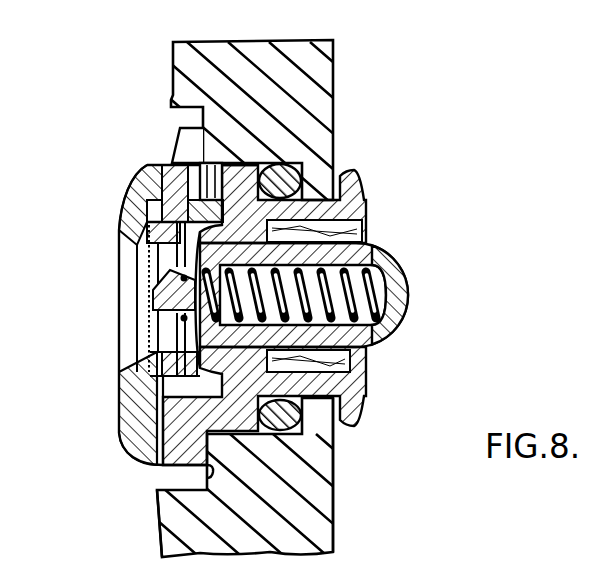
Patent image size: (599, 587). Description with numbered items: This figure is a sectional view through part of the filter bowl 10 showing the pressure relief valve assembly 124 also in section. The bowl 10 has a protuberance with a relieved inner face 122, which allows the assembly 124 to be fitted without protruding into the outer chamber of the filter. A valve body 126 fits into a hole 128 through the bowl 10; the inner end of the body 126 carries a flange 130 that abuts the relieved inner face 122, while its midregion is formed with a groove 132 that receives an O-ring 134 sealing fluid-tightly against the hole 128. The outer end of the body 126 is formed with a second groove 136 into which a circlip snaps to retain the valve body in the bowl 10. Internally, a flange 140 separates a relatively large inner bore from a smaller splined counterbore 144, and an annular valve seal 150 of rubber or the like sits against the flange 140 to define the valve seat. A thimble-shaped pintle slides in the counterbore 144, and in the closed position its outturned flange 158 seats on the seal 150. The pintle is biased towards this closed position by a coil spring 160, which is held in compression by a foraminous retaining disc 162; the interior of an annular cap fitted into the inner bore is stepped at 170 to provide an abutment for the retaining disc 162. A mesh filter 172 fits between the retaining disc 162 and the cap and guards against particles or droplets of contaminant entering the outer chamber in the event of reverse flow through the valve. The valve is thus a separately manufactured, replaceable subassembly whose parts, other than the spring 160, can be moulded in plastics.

The filter bowl 10 is at (308, 500).
The relieved inner face 122 is at (163, 514).
The pressure relief valve assembly 124 is at (121, 160).
The valve body 126 is at (136, 447).
The hole 128 is at (330, 445).
The flange 130 is at (190, 472).
The groove 132 is at (352, 386).
The O-ring 134 is at (333, 474).
The second groove 136 is at (333, 167).
The flange 140 is at (246, 165).
The splined counterbore 144 is at (365, 218).
The annular valve seal 150 is at (213, 165).
The outturned flange 158 is at (127, 411).
The coil spring 160 is at (373, 248).
The foraminous retaining disc 162 is at (148, 339).
The step 170 is at (119, 223).
The mesh filter 172 is at (137, 262).